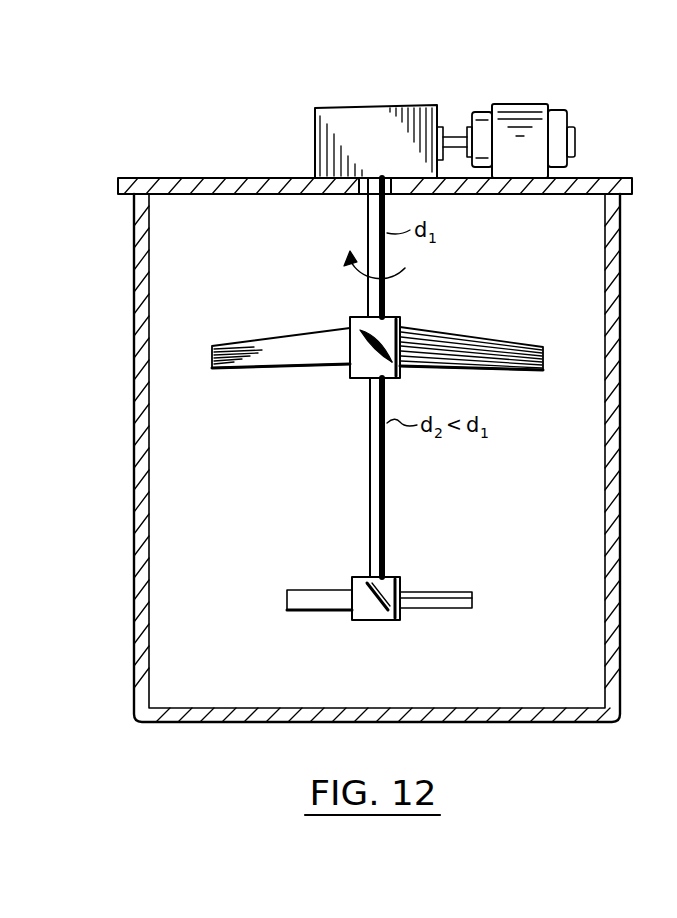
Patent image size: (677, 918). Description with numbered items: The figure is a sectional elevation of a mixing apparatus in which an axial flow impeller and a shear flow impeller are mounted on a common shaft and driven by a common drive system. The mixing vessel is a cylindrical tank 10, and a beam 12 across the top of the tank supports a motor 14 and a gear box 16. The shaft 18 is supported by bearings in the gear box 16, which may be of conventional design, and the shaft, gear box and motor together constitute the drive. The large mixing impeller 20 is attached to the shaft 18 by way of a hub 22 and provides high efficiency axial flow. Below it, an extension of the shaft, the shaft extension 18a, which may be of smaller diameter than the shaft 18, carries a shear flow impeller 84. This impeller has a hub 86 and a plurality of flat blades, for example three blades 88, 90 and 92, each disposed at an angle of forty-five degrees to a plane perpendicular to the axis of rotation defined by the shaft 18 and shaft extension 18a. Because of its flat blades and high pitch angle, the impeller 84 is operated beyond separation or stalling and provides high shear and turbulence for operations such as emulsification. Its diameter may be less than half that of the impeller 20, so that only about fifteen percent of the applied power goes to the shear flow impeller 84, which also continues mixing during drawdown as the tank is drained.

The cylindrical tank 10 is at (134, 297).
The beam 12 is at (195, 176).
The motor 14 is at (508, 104).
The gear box 16 is at (313, 107).
The shaft 18 is at (370, 210).
The shaft extension 18a is at (387, 483).
The mixing impeller 20 is at (377, 348).
The hub 22 is at (355, 380).
The shear flow impeller 84 is at (402, 590).
The hub 86 is at (382, 620).
The blade 88 is at (472, 597).
The blade 90 is at (367, 582).
The blade 92 is at (298, 614).